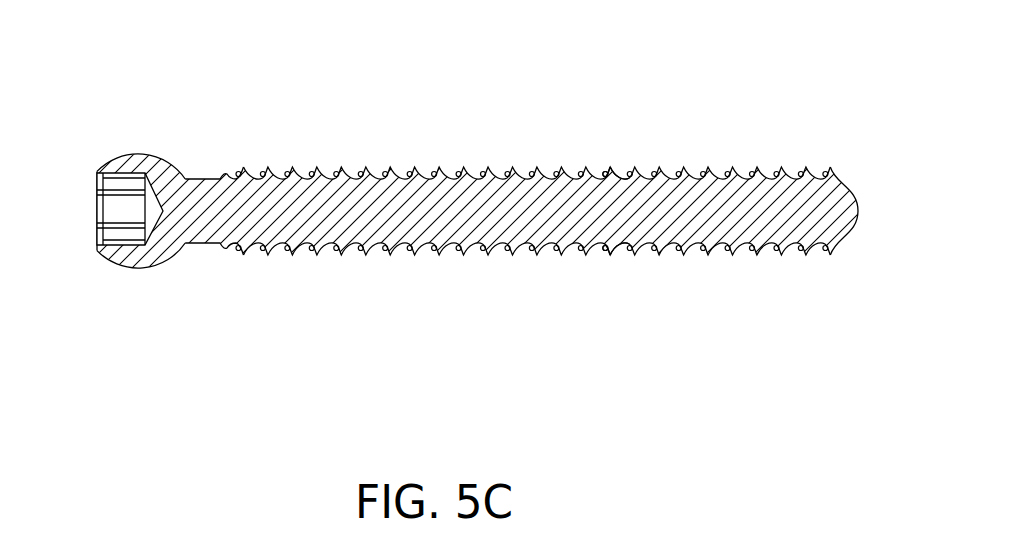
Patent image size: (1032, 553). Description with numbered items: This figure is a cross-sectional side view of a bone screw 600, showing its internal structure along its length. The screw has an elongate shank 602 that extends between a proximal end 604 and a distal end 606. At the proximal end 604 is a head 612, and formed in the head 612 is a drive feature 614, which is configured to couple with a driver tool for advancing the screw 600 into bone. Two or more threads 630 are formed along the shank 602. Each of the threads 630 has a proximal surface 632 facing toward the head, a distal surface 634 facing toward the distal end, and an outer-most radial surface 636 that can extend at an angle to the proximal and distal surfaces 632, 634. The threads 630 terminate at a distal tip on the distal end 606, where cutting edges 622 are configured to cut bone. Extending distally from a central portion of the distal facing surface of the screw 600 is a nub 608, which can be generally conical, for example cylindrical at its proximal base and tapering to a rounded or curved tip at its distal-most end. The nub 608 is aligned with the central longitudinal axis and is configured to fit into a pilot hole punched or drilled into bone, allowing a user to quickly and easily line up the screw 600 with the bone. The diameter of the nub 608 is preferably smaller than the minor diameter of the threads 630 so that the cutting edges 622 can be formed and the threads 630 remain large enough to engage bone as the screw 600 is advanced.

The bone screw 600 is at (242, 88).
The elongate shank 602 is at (501, 289).
The proximal end 604 is at (186, 296).
The distal end 606 is at (785, 275).
The nub 608 is at (855, 197).
The head 612 is at (125, 160).
The drive feature 614 is at (122, 212).
The cutting edges 622 is at (821, 164).
The threads 630 is at (600, 151).
The proximal surface 632 is at (597, 167).
The distal surface 634 is at (620, 168).
The outer-most radial surface 636 is at (613, 168).